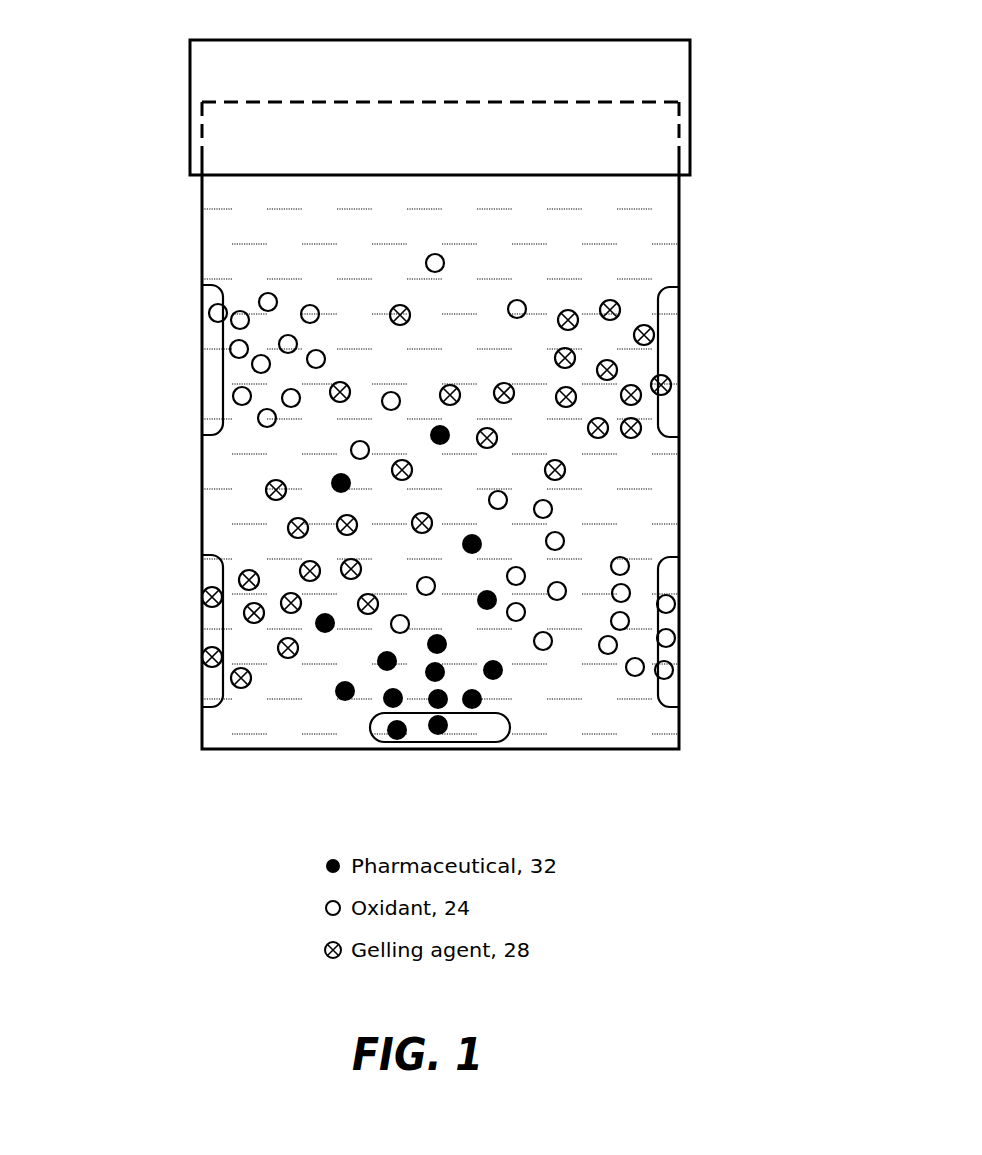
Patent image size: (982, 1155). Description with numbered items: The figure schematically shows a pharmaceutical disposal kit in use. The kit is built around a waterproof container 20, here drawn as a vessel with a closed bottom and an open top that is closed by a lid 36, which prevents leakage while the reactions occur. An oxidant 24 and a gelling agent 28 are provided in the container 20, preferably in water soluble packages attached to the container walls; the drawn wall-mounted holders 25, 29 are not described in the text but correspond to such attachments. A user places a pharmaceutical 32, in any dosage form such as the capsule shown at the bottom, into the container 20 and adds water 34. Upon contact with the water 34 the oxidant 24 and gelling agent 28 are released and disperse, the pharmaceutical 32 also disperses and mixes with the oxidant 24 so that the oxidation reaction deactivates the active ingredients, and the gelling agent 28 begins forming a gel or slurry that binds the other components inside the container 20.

The waterproof container 20 is at (679, 488).
The oxidant 24 is at (256, 366).
The clip 25 is at (210, 297).
The gelling agent 28 is at (616, 366).
The clip 29 is at (672, 338).
The pharmaceutical 32 is at (487, 722).
The water 34 is at (648, 228).
The lid 36 is at (690, 90).